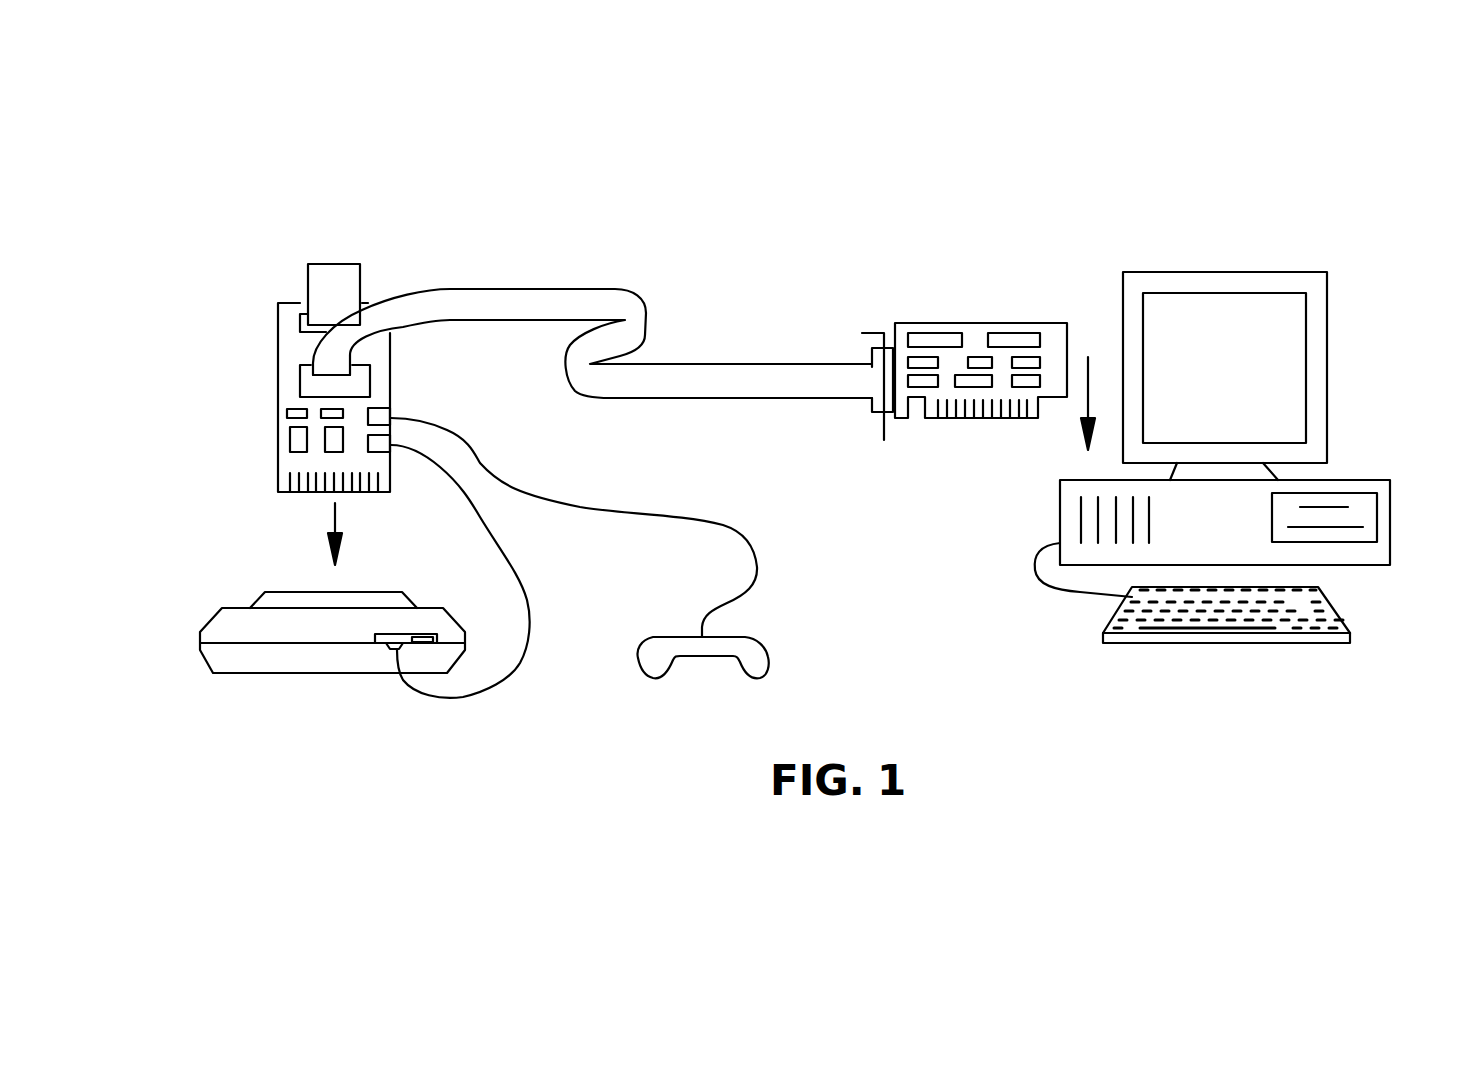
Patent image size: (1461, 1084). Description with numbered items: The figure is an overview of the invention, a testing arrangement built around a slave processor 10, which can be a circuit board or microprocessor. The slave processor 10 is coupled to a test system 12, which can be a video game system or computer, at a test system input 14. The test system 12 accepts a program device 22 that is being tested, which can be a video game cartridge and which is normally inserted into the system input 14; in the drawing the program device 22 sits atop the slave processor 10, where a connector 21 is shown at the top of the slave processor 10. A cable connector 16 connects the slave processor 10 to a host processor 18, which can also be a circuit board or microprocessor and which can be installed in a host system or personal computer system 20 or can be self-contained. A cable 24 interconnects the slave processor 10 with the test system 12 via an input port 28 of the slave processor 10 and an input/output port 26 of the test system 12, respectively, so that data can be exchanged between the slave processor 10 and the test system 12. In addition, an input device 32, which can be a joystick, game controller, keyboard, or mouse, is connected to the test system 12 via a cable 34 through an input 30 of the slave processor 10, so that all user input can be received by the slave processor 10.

The slave processor 10 is at (278, 380).
The test system 12 is at (188, 608).
The test system input 14 is at (280, 590).
The cable connector 16 is at (545, 288).
The host processor 18 is at (977, 323).
The personal computer system 20 is at (1348, 368).
The card connector 21 is at (300, 325).
The program device 22 is at (331, 262).
The cable 24 is at (485, 695).
The input/output port 26 is at (382, 647).
The input port 28 is at (386, 452).
The input 30 is at (386, 412).
The input device 32 is at (765, 647).
The cable 34 is at (728, 525).